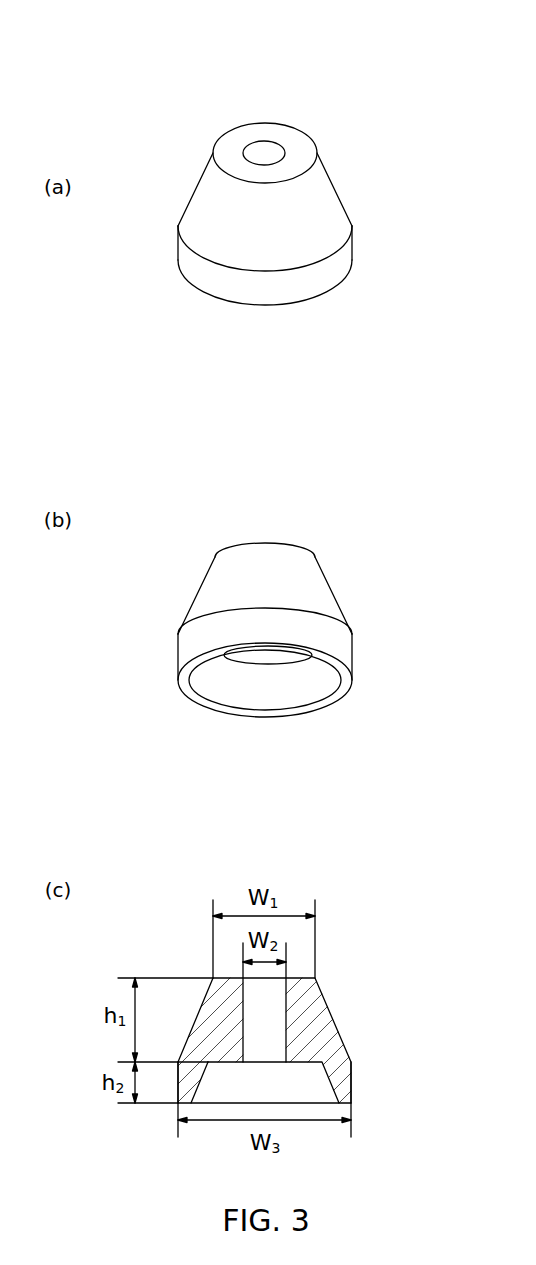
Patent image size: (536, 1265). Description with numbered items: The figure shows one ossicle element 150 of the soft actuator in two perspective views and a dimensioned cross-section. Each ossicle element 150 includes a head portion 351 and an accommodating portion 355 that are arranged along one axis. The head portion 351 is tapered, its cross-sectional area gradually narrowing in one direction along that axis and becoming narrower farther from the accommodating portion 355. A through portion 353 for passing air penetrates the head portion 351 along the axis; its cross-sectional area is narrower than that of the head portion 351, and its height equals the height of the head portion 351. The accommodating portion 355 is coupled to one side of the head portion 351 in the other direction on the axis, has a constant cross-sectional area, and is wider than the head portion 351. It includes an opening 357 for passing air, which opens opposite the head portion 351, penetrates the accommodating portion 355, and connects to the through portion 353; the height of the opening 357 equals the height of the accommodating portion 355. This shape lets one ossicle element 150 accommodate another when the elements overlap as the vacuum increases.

The ossicle element 150 is at (303, 78).
The head portion 351 is at (330, 188).
The through portion 353 is at (265, 152).
The accommodating portion 355 is at (265, 295).
The opening 357 is at (262, 702).